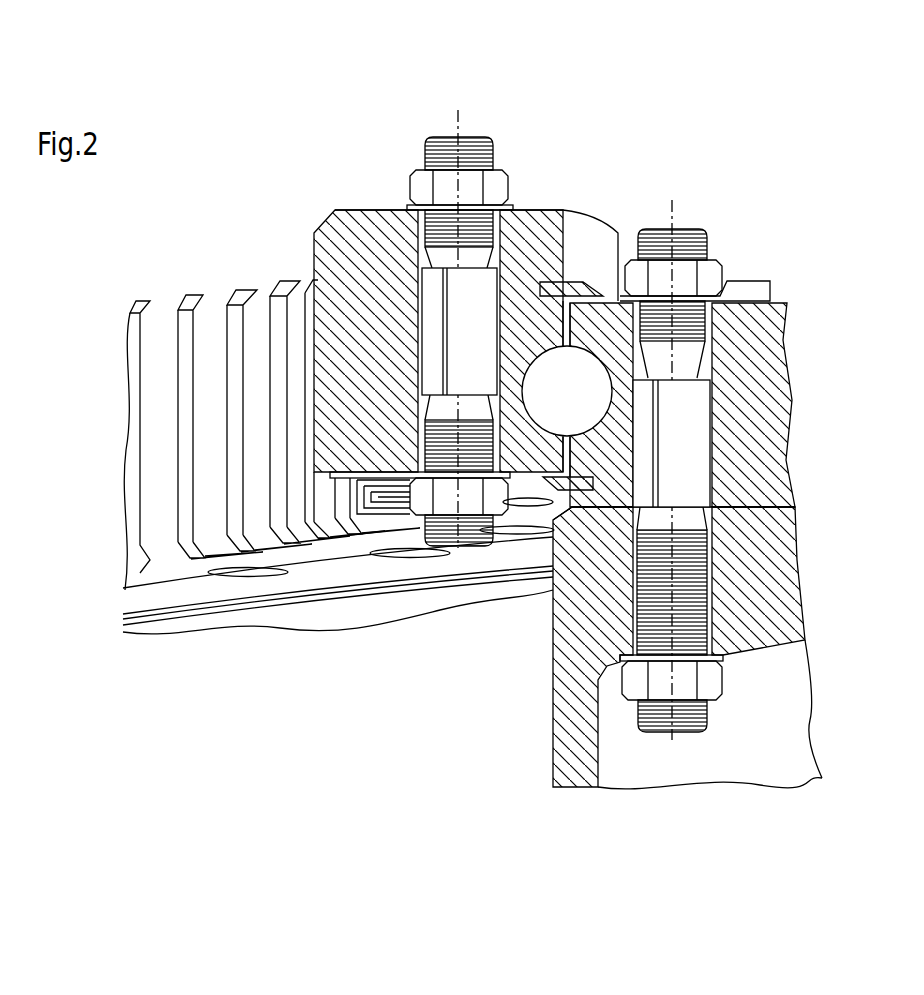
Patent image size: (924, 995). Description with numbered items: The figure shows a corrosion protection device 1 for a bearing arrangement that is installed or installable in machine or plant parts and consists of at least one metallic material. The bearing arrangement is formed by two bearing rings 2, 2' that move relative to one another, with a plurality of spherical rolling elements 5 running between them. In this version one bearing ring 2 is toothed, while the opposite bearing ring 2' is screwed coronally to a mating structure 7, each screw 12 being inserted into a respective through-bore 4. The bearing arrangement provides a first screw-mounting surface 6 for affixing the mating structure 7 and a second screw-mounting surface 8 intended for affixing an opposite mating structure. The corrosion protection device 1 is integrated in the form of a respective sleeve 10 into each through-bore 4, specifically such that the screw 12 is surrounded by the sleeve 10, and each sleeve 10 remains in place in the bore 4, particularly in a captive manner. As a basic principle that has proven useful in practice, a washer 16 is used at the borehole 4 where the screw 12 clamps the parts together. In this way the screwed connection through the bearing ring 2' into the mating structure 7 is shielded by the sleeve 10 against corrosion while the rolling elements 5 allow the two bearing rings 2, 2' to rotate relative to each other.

The corrosion protection device 1 is at (818, 102).
The bearing ring 2 is at (370, 422).
The opposite bearing ring 2' is at (698, 394).
The through-bore 4 is at (518, 198).
The spherical rolling element 5 is at (576, 405).
The first screw-mounting surface 6 is at (775, 522).
The mating structure 7 is at (772, 582).
The second screw-mounting surface 8 is at (362, 210).
The sleeve 10 is at (492, 351).
The screw 12 is at (470, 143).
The washer 16 is at (730, 288).